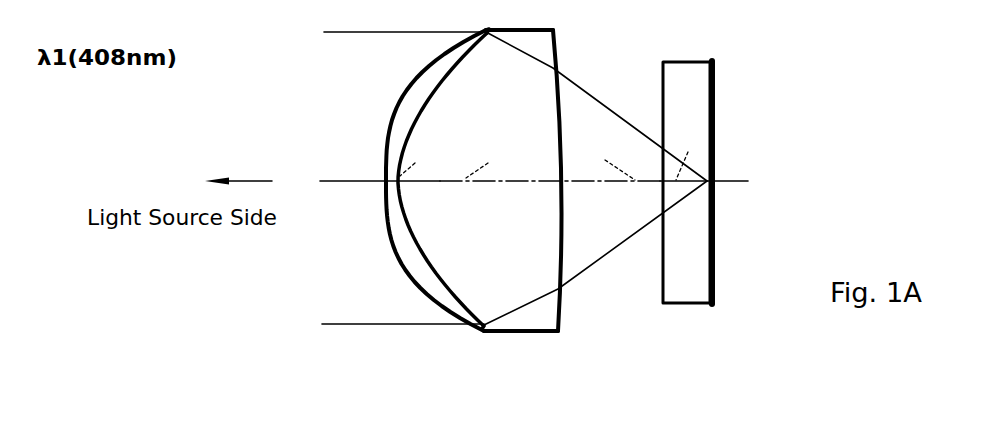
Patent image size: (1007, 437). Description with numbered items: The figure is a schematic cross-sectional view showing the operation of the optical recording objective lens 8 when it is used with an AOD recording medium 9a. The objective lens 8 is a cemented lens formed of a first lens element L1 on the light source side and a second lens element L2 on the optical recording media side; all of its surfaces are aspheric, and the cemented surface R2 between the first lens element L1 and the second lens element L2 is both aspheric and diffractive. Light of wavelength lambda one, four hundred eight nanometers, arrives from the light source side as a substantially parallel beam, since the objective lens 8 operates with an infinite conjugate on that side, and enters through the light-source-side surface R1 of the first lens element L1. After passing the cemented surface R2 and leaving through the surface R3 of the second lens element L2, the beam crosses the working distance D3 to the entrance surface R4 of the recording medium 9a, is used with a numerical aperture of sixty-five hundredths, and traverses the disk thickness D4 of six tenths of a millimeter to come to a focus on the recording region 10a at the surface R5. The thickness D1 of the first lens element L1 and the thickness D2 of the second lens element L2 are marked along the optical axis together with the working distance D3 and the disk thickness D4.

The objective lens 8 is at (490, 184).
The AOD recording medium 9a is at (694, 175).
The recording region 10a is at (716, 138).
The first lens element L1 is at (413, 197).
The second lens element L2 is at (552, 197).
The first lens surface R1 is at (392, 234).
The cemented surface R2 is at (420, 232).
The second lens exit surface R3 is at (563, 202).
The recording medium entrance surface R4 is at (661, 267).
The recording region surface R5 is at (708, 268).
The first lens thickness D1 is at (421, 157).
The second lens thickness D2 is at (487, 158).
The working distance D3 is at (606, 159).
The disk thickness D4 is at (687, 154).